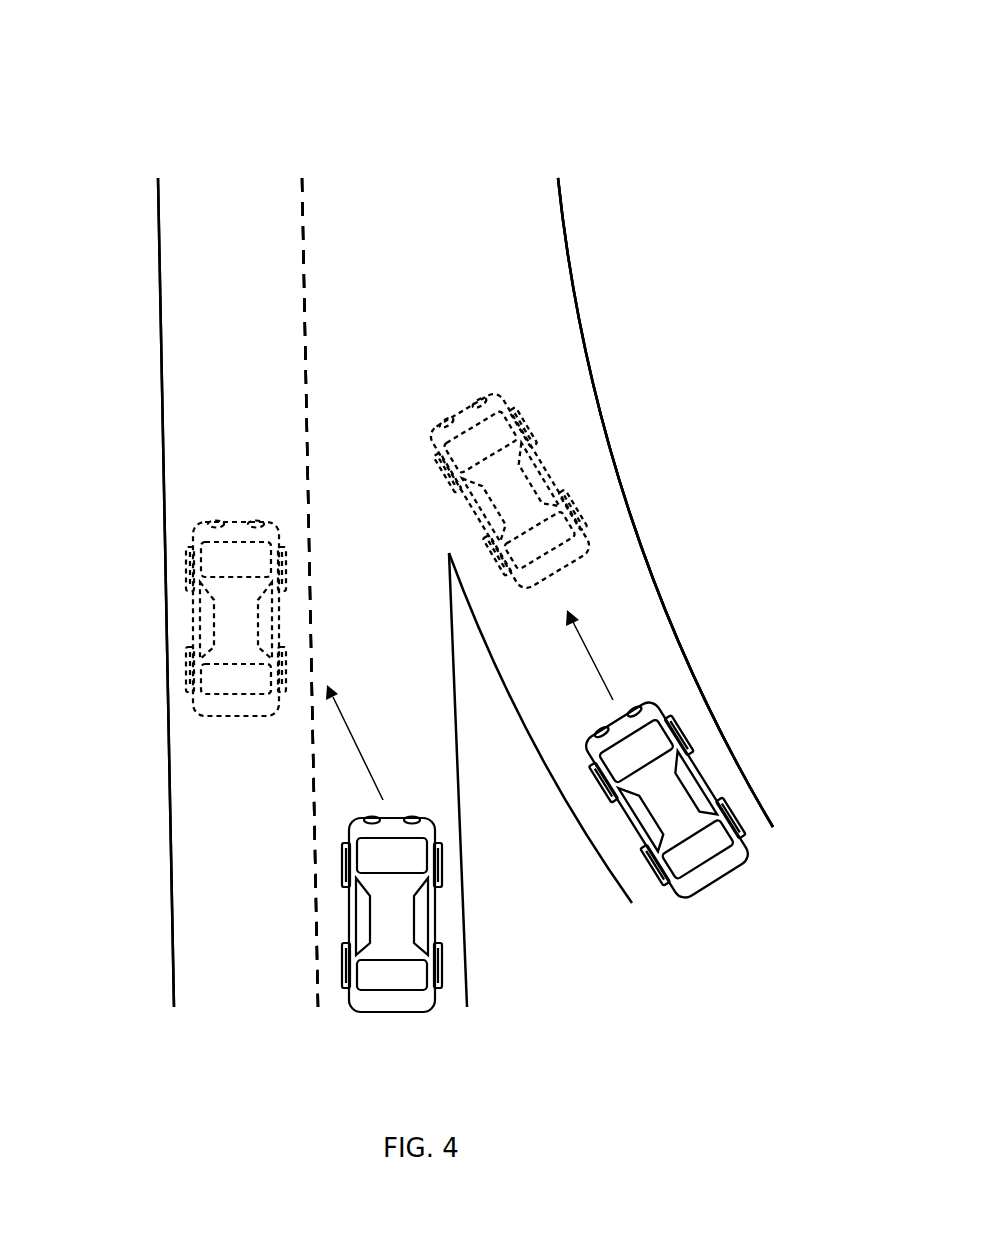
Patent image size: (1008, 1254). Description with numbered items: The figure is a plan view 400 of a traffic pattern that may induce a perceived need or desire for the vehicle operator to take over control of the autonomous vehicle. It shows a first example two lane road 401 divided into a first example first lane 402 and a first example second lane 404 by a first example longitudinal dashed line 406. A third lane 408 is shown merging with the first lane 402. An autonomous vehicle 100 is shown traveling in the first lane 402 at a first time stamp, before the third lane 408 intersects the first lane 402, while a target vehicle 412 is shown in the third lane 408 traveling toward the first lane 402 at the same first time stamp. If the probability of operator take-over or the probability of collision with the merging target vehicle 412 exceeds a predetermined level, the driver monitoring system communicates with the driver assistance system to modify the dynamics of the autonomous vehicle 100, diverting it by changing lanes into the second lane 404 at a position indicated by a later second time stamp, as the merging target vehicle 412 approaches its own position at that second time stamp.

The plan view 400 is at (680, 213).
The two lane road 401 is at (236, 160).
The first lane 402 is at (368, 380).
The second lane 404 is at (208, 335).
The longitudinal dashed line 406 is at (302, 232).
The third lane 408 is at (670, 666).
The autonomous vehicle 100 is at (223, 620).
The target vehicle 412 is at (512, 485).